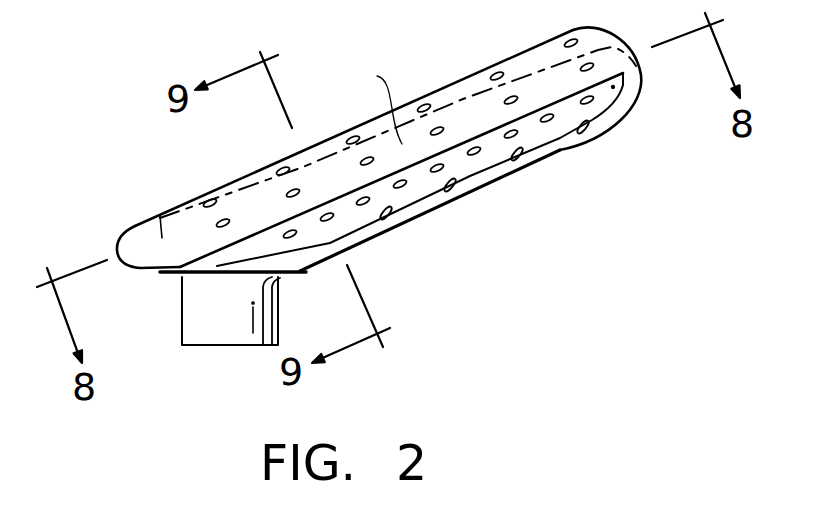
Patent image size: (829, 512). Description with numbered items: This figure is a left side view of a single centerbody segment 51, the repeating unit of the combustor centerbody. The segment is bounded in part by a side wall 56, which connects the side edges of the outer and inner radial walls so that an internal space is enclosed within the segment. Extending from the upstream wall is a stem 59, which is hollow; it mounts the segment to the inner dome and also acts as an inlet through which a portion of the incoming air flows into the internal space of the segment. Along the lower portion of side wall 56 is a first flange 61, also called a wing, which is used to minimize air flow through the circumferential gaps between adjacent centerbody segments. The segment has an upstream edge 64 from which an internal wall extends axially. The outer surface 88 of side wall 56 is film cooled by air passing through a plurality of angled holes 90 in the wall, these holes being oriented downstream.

The centerbody segment 51 is at (373, 143).
The side wall 56 is at (160, 214).
The stem 59 is at (238, 323).
The first flange 61 is at (610, 92).
The upstream edge 64 is at (118, 242).
The outer surface 88 is at (369, 103).
The angled holes 90 is at (285, 168).